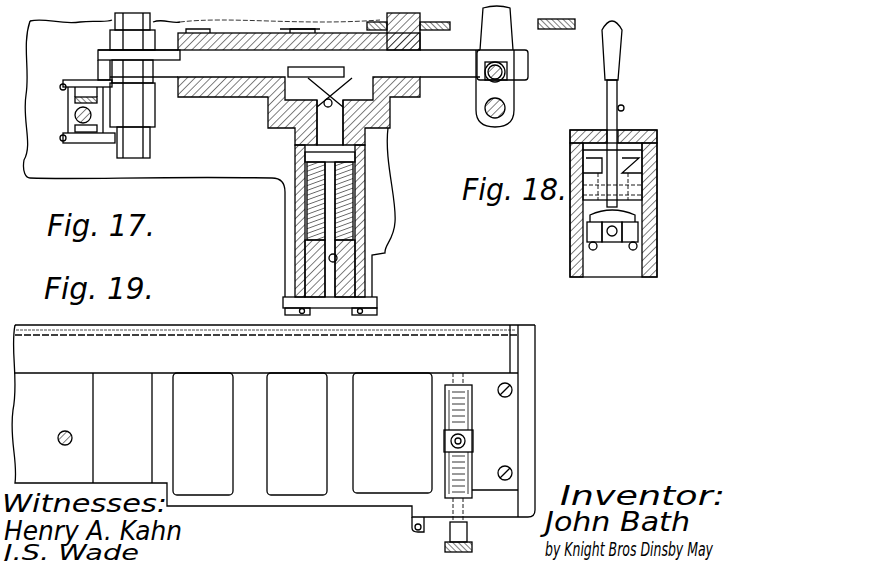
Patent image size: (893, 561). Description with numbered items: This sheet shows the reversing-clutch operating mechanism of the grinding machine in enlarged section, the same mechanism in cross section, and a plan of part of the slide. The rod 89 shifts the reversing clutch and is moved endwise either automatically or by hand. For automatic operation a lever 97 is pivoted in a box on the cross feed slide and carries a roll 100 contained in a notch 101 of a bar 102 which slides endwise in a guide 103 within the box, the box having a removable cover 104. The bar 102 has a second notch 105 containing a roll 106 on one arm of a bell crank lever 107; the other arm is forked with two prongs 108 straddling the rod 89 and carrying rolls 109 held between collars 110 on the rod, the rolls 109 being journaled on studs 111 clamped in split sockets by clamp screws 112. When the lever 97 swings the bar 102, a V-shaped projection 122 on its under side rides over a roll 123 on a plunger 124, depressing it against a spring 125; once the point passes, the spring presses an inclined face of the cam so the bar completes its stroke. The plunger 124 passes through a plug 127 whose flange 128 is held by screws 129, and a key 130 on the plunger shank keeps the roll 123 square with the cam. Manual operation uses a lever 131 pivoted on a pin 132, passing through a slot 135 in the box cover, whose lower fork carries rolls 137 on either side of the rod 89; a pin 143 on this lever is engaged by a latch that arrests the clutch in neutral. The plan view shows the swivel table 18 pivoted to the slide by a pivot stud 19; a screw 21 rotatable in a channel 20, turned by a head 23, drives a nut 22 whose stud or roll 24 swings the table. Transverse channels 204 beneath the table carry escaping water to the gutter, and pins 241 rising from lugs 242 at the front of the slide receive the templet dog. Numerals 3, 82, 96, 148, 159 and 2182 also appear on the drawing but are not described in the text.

In FIG. 19, the frame 3 is at (266, 335).
In FIG. 19, the swivel table 18 is at (250, 508).
In FIG. 19, the pivot stud 19 is at (60, 432).
In FIG. 19, the channel 20 is at (472, 410).
In FIG. 19, the screw 21 is at (450, 470).
In FIG. 19, the nut 22 is at (473, 441).
In FIG. 19, the head 23 is at (445, 546).
In FIG. 19, the stud or roll 24 is at (444, 441).
In FIG. 17, the bar 82 is at (288, 29).
In FIG. 17, the rod 89 is at (415, 33).
In FIG. 17, the knurled screw 96 is at (372, 26).
In FIG. 17, the lever 97 is at (450, 28).
In FIG. 17, the roll 100 is at (505, 80).
In FIG. 18, the roll 100 is at (630, 12).
In FIG. 17, the notch 101 is at (528, 64).
In FIG. 17, the bar 102 is at (446, 70).
In FIG. 17, the guide 103 is at (240, 97).
In FIG. 17, the removable cover 104 is at (233, 40).
In FIG. 17, the notch 105 is at (98, 72).
In FIG. 17, the roll 106 is at (289, 64).
In FIG. 17, the bell crank lever 107 is at (153, 120).
In FIG. 17, the prongs 108 is at (100, 146).
In FIG. 17, the rolls 109 is at (60, 88).
In FIG. 17, the collars 110 is at (72, 113).
In FIG. 18, the collars 110 is at (568, 6).
In FIG. 17, the studs 111 is at (70, 129).
In FIG. 18, the studs 111 is at (542, 6).
In FIG. 17, the clamp screws 112 is at (62, 146).
In FIG. 17, the V-shaped projection 122 is at (320, 79).
In FIG. 17, the roll 123 is at (355, 80).
In FIG. 17, the plunger 124 is at (300, 142).
In FIG. 17, the spring 125 is at (365, 195).
In FIG. 17, the plug 127 is at (298, 283).
In FIG. 17, the flange 128 is at (377, 300).
In FIG. 17, the screws 129 is at (377, 312).
In FIG. 17, the key 130 is at (365, 270).
In FIG. 18, the key 130 is at (612, 244).
In FIG. 18, the lever 131 is at (620, 44).
In FIG. 18, the pin 132 is at (645, 182).
In FIG. 18, the slot 135 is at (660, 138).
In FIG. 18, the rolls 137 is at (645, 230).
In FIG. 18, the pin 143 is at (625, 108).
In FIG. 17, the knurled screw 148 is at (548, 29).
In FIG. 18, the handle top 159 is at (642, 8).
In FIG. 19, the transverse channels 204 is at (267, 434).
In FIG. 19, the pins 241 is at (414, 527).
In FIG. 19, the lugs 242 is at (412, 532).
In FIG. 17, the bar 2182 is at (458, 41).